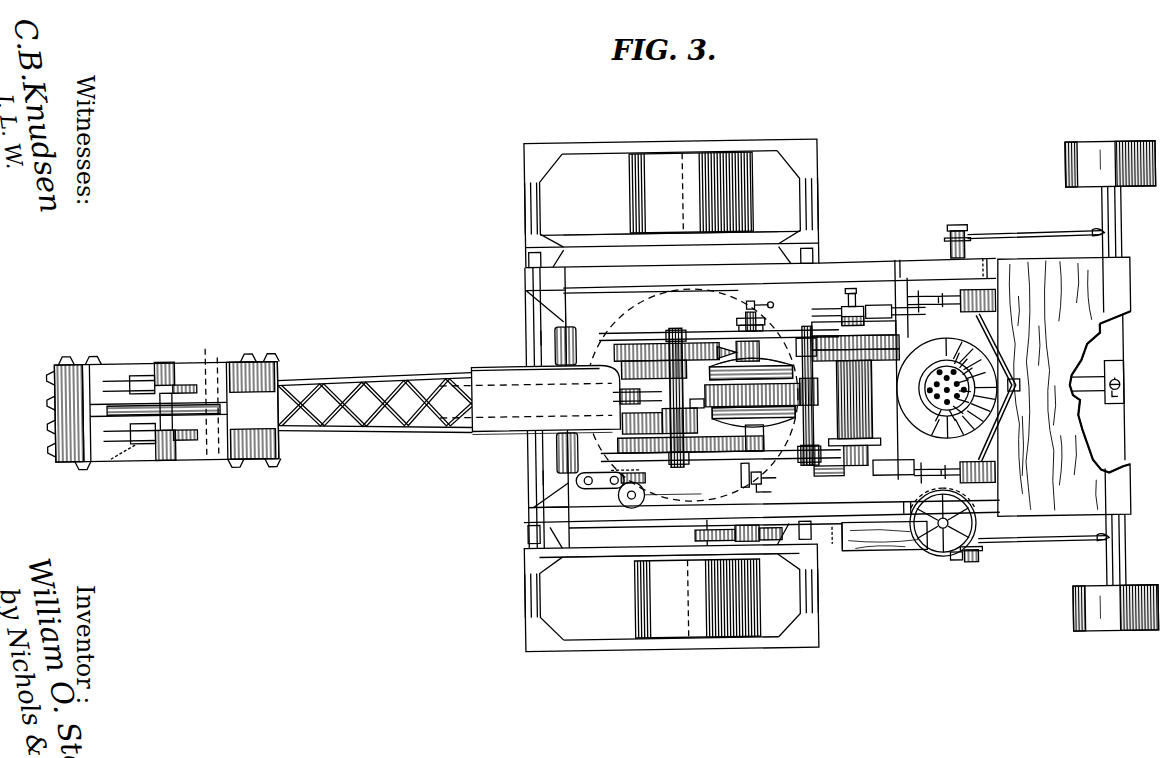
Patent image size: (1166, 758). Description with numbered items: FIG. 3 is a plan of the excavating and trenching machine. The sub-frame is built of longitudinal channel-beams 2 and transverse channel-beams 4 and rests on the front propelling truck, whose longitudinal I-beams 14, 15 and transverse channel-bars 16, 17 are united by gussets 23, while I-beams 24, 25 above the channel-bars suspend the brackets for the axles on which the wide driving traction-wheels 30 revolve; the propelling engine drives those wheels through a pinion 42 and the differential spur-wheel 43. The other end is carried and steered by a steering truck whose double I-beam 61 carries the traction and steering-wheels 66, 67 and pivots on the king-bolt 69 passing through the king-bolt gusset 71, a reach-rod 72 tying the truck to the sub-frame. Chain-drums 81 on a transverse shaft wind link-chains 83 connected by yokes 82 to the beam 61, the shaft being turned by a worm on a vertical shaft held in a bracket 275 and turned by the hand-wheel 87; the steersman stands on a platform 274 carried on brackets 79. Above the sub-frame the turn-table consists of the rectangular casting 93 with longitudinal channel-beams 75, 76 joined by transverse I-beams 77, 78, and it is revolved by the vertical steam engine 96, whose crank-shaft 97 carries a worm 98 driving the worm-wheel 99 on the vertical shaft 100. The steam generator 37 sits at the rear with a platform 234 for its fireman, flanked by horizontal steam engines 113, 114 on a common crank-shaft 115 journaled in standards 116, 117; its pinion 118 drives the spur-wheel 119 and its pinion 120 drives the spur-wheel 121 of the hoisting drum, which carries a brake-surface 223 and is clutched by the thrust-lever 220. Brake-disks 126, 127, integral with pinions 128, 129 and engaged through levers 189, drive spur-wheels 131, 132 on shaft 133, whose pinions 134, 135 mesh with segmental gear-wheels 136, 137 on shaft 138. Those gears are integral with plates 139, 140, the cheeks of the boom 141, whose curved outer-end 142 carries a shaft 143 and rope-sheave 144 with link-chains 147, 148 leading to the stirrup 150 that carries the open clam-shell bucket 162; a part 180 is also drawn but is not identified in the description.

The longitudinal channel-beam 2 is at (760, 403).
The transverse channel-beam 4 is at (542, 340).
The longitudinal I-beam 14 is at (631, 648).
The longitudinal I-beam 15 is at (620, 140).
The transverse channel-bar 16 is at (821, 592).
The transverse channel-bar 17 is at (528, 210).
The gusset 23 is at (664, 398).
The I-beam 24 is at (669, 568).
The I-beam 25 is at (670, 224).
The driving traction-wheel 30 is at (694, 395).
The steam generator 37 is at (947, 388).
The pinion 42 is at (693, 535).
The spur-wheel 43 is at (769, 534).
The double I-beam 61 is at (1124, 217).
The traction and steering-wheel 66 is at (1104, 608).
The traction and steering-wheel 67 is at (1097, 164).
The king-bolt 69 is at (1120, 390).
The king-bolt gusset 71 is at (1120, 403).
The reach-rod 72 is at (1087, 376).
The longitudinal channel-beam 75 is at (885, 548).
The longitudinal channel-beam 76 is at (870, 268).
The transverse I-beam 77 is at (987, 260).
The transverse I-beam 78 is at (898, 260).
The bracket 79 is at (834, 538).
The chain-drum 81 is at (970, 231).
The yoke 82 is at (1097, 237).
The link-chain 83 is at (1021, 238).
The hand-wheel 87 is at (954, 563).
The rectangular casting 93 is at (683, 378).
The double-cylinder vertical steam engine 96 is at (600, 490).
The crank-shaft 97 is at (646, 480).
The worm 98 is at (626, 461).
The worm-wheel 99 is at (626, 503).
The vertical shaft 100 is at (671, 508).
The horizontal steam engine 113 is at (994, 472).
The horizontal steam engine 114 is at (997, 307).
The common crank-shaft 115 is at (820, 422).
The standard 116 is at (813, 474).
The standard 117 is at (703, 331).
The pinion 118 is at (854, 413).
The spur-wheel 119 is at (743, 395).
The pinion 120 is at (803, 352).
The spur-wheel 121 is at (900, 348).
The brake-disk 126 is at (753, 418).
The brake-disk 127 is at (750, 367).
The pinion 128 is at (750, 312).
The pinion 129 is at (763, 435).
The spur-wheel 131 is at (615, 350).
The spur-wheel 132 is at (617, 439).
The shaft 133 is at (677, 397).
The pinion 134 is at (706, 418).
The pinion 135 is at (716, 361).
The segmental gear-wheel 136 is at (622, 419).
The segmental gear-wheel 137 is at (622, 370).
The shaft 138 is at (556, 315).
The plate 139 is at (488, 430).
The plate 140 is at (492, 363).
The boom 141 is at (349, 409).
The curved outer-end 142 is at (208, 340).
The shaft 143 is at (190, 451).
The rope-sheave 144 is at (218, 446).
The link-chain 147 is at (163, 353).
The link-chain 148 is at (165, 451).
The stirrup 150 is at (130, 451).
The clam-shell bucket 162 is at (47, 399).
The lever 180 is at (770, 488).
The lever 189 is at (760, 297).
The thrust-lever 220 is at (868, 304).
The brake-surface 223 is at (884, 363).
The platform 234 is at (1124, 322).
The platform 274 is at (853, 552).
The bracket 275 is at (931, 560).